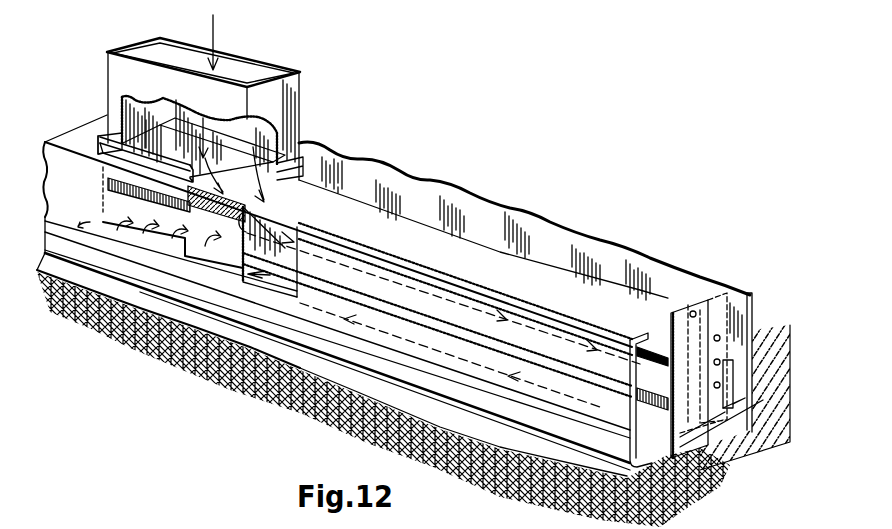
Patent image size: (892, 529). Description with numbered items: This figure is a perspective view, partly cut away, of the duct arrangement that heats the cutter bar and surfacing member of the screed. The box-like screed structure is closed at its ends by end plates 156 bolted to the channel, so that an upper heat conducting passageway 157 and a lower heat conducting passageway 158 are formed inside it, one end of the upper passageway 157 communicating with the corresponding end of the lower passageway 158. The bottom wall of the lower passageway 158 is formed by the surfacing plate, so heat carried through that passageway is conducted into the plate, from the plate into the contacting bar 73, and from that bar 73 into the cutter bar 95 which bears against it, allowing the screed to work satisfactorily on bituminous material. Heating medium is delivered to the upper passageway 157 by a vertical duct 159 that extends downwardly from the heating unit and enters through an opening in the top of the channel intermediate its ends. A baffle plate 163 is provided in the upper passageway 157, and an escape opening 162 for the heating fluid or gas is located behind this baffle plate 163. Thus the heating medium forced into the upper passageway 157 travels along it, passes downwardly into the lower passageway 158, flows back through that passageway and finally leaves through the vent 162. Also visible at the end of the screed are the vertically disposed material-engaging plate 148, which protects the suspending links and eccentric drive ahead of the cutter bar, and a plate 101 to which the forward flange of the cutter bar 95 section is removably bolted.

The vertical duct 159 is at (293, 102).
The baffle plate 163 is at (108, 196).
The escape opening 162 is at (112, 220).
The end plate 156 is at (692, 330).
The upper heat conducting passageway 157 is at (667, 350).
The lower heat conducting passageway 158 is at (627, 463).
The material-engaging plate 148 is at (750, 312).
The plate 101 is at (733, 373).
The bar 73 is at (713, 443).
The cutter bar 95 is at (753, 445).